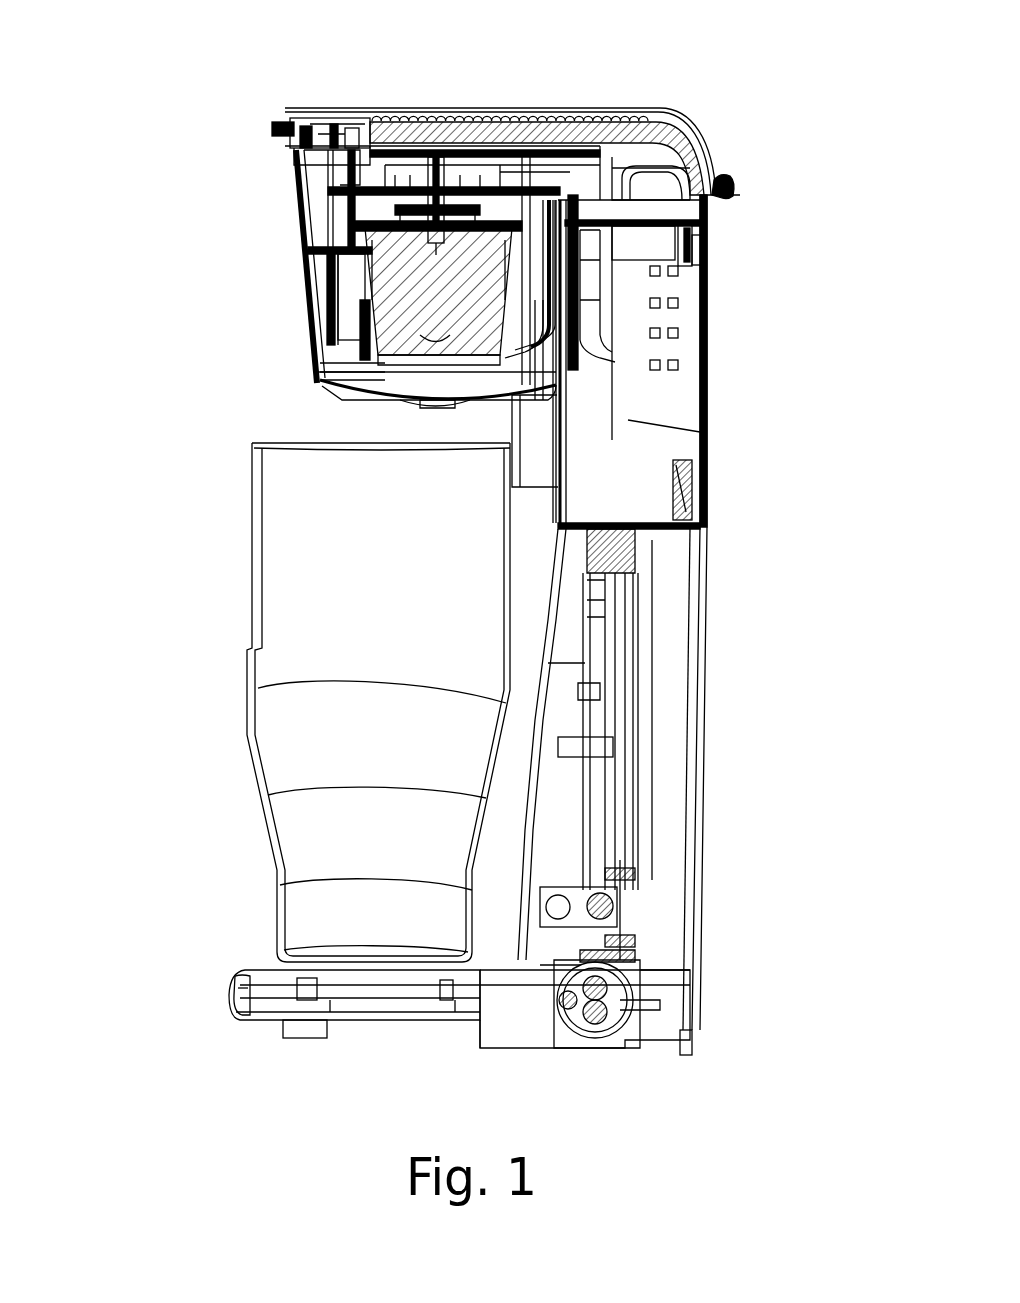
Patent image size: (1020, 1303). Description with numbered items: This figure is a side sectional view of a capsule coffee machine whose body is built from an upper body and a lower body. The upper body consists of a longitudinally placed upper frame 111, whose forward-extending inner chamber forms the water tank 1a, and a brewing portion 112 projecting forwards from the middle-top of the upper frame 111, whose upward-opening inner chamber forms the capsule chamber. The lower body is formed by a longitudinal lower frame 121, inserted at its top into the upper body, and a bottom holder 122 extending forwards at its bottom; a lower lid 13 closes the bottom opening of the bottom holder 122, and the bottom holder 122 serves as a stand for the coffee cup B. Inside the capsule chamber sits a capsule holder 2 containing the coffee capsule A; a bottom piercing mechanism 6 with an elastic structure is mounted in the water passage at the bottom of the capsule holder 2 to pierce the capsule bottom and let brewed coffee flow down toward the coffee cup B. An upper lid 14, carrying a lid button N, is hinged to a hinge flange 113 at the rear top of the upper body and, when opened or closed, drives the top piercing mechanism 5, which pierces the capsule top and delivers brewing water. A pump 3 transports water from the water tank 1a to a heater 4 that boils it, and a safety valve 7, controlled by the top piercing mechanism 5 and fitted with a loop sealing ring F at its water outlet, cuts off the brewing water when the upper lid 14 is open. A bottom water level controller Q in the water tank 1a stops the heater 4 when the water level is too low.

The upper lid 14 is at (608, 122).
The safety valve 7 is at (698, 170).
The hinge flange 113 is at (735, 188).
The lid button N is at (272, 128).
The upper frame 111 is at (706, 350).
The water tank 1a is at (635, 420).
The loop sealing ring F is at (620, 232).
The bottom water level controller Q is at (700, 470).
The capsule holder 2 is at (345, 242).
The brewing portion 112 is at (308, 306).
The coffee capsule A is at (390, 290).
The top piercing mechanism 5 is at (432, 138).
The bottom piercing mechanism 6 is at (322, 378).
The coffee cup B is at (263, 643).
The lower frame 121 is at (703, 705).
The heater 4 is at (612, 896).
The lower lid 13 is at (398, 1022).
The bottom holder 122 is at (242, 982).
The pump 3 is at (605, 1038).